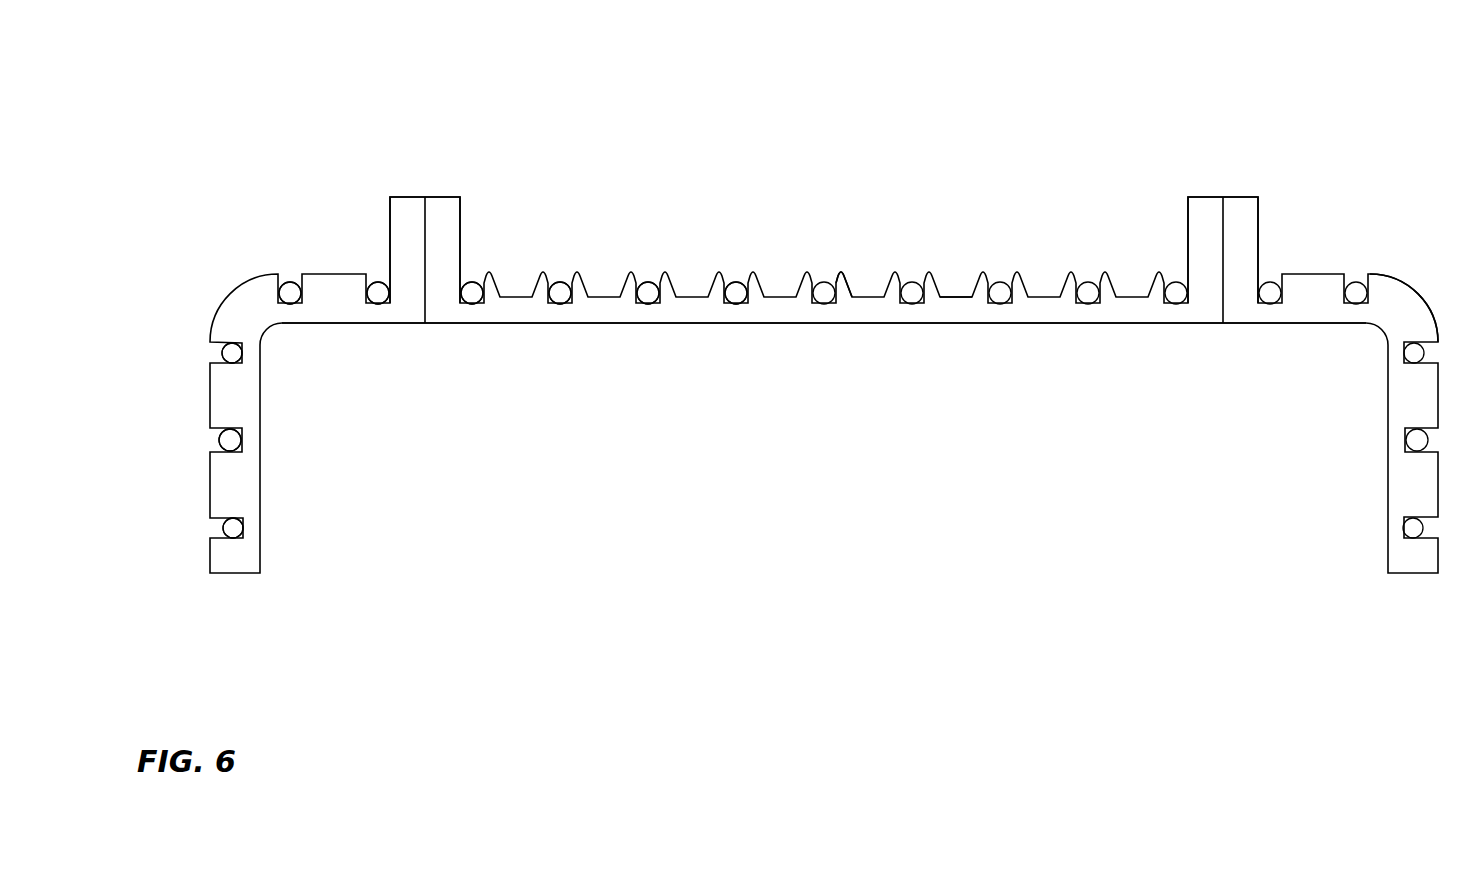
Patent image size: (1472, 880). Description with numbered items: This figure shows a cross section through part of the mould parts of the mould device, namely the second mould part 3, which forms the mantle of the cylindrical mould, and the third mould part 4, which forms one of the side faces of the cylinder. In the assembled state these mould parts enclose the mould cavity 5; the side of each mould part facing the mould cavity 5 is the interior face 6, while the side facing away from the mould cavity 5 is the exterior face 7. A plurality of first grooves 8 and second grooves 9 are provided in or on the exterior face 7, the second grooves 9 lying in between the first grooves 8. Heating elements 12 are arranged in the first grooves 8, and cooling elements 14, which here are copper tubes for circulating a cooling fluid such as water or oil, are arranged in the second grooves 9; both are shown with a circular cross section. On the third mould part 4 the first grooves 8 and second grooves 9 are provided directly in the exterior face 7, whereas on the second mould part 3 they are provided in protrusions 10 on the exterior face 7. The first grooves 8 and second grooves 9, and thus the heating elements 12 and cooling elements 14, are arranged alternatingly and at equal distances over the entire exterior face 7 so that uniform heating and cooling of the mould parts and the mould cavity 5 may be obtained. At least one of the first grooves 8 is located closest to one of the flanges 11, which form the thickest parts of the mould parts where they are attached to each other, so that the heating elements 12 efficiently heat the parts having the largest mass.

The second mould part 3 is at (242, 323).
The third mould part 4 is at (1399, 308).
The mould cavity 5 is at (1150, 470).
The interior face 6 is at (977, 334).
The exterior face 7 is at (955, 288).
The first grooves 8 is at (382, 293).
The second grooves 9 is at (293, 293).
The protrusions 10 is at (840, 283).
The flanges 11 is at (443, 212).
The heating elements 12 is at (380, 293).
The cooling elements 14 is at (291, 293).